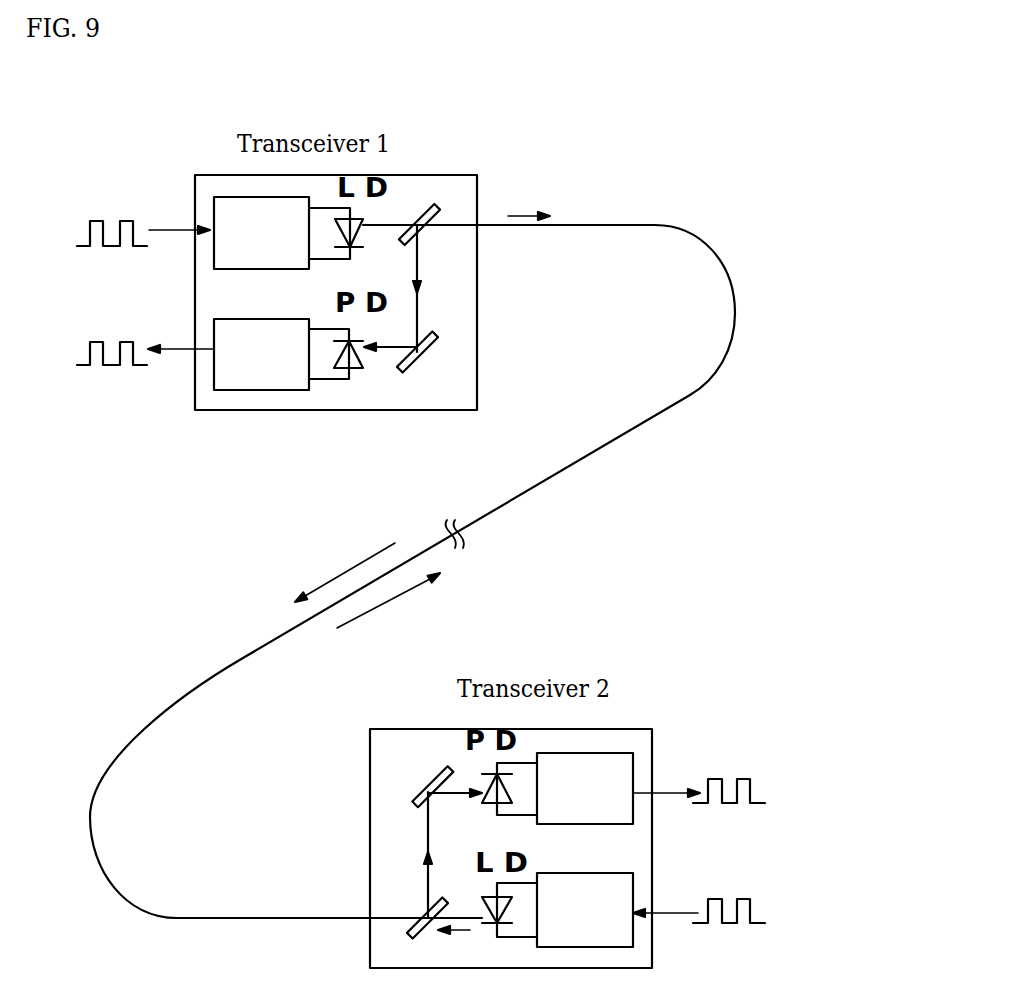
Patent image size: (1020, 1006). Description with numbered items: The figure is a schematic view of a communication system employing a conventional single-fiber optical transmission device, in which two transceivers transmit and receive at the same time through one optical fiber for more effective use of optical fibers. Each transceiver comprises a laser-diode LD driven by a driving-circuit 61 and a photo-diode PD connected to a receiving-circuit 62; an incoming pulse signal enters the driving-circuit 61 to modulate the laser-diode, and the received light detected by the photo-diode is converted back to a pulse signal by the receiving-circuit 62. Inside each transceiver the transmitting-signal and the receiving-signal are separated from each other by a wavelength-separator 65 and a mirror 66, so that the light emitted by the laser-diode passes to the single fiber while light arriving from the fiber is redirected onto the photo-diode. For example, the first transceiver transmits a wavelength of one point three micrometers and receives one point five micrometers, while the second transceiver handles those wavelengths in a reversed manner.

The driving-circuit 61 is at (232, 220).
The receiving-circuit 62 is at (227, 373).
The wavelength-separator 65 is at (437, 210).
The mirror 66 is at (437, 338).